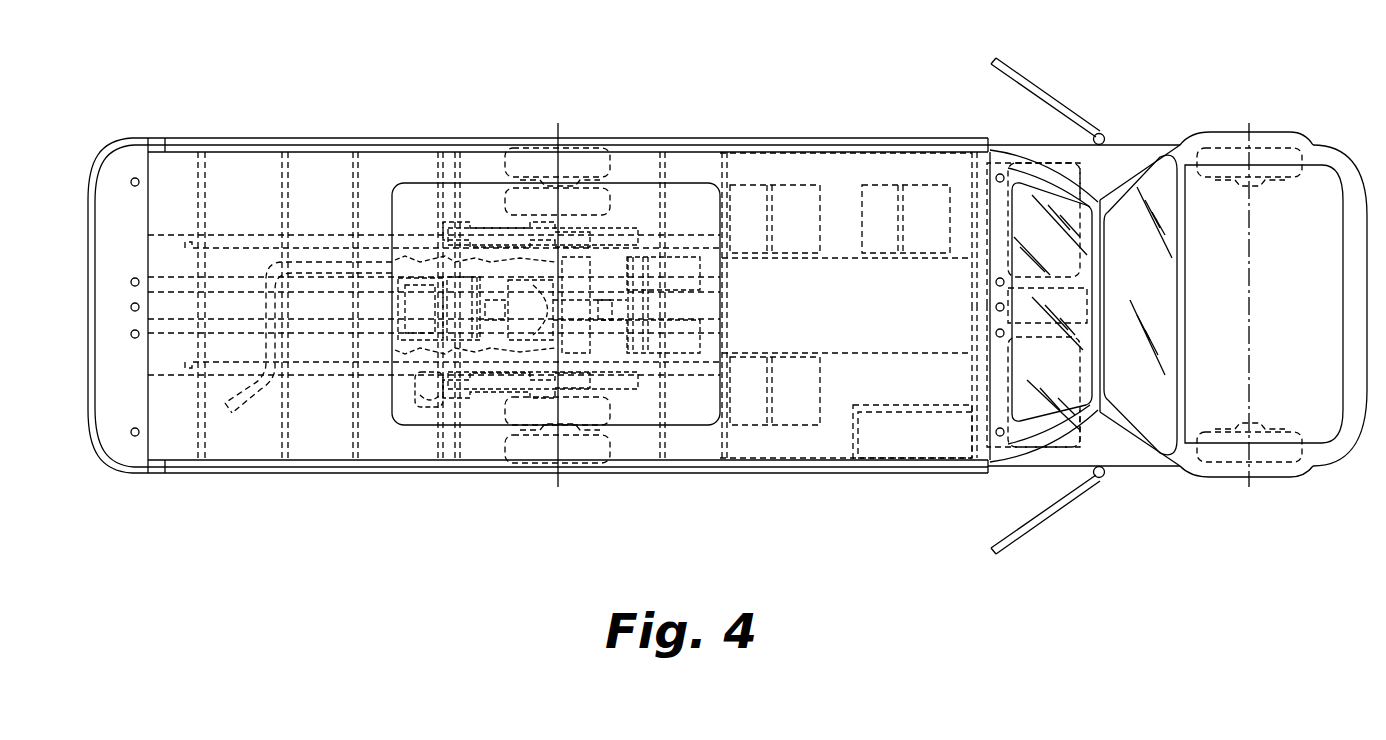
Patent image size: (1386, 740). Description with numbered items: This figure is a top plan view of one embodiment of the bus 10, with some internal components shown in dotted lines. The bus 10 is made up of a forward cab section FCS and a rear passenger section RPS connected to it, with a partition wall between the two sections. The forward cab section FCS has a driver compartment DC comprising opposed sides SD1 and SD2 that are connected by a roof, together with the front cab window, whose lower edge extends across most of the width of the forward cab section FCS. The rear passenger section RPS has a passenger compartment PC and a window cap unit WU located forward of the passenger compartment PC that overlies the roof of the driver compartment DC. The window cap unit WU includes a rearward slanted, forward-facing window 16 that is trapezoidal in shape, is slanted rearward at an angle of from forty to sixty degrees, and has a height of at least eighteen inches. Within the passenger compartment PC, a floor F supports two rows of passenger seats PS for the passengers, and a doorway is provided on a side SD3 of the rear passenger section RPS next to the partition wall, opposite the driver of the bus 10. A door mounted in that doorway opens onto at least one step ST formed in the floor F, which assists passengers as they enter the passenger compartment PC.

The rear passenger section RPS is at (361, 125).
The floor F is at (845, 172).
The passenger seats PS is at (789, 185).
The side SD1 is at (985, 173).
The side SD2 is at (982, 447).
The side SD3 is at (497, 477).
The window cap unit WU is at (1042, 165).
The passenger compartment PC is at (728, 335).
The step ST is at (890, 448).
The driver compartment DC is at (1037, 425).
The forward-facing window 16 is at (1080, 403).
The bus 10 is at (1164, 480).
The forward cab section FCS is at (1282, 494).